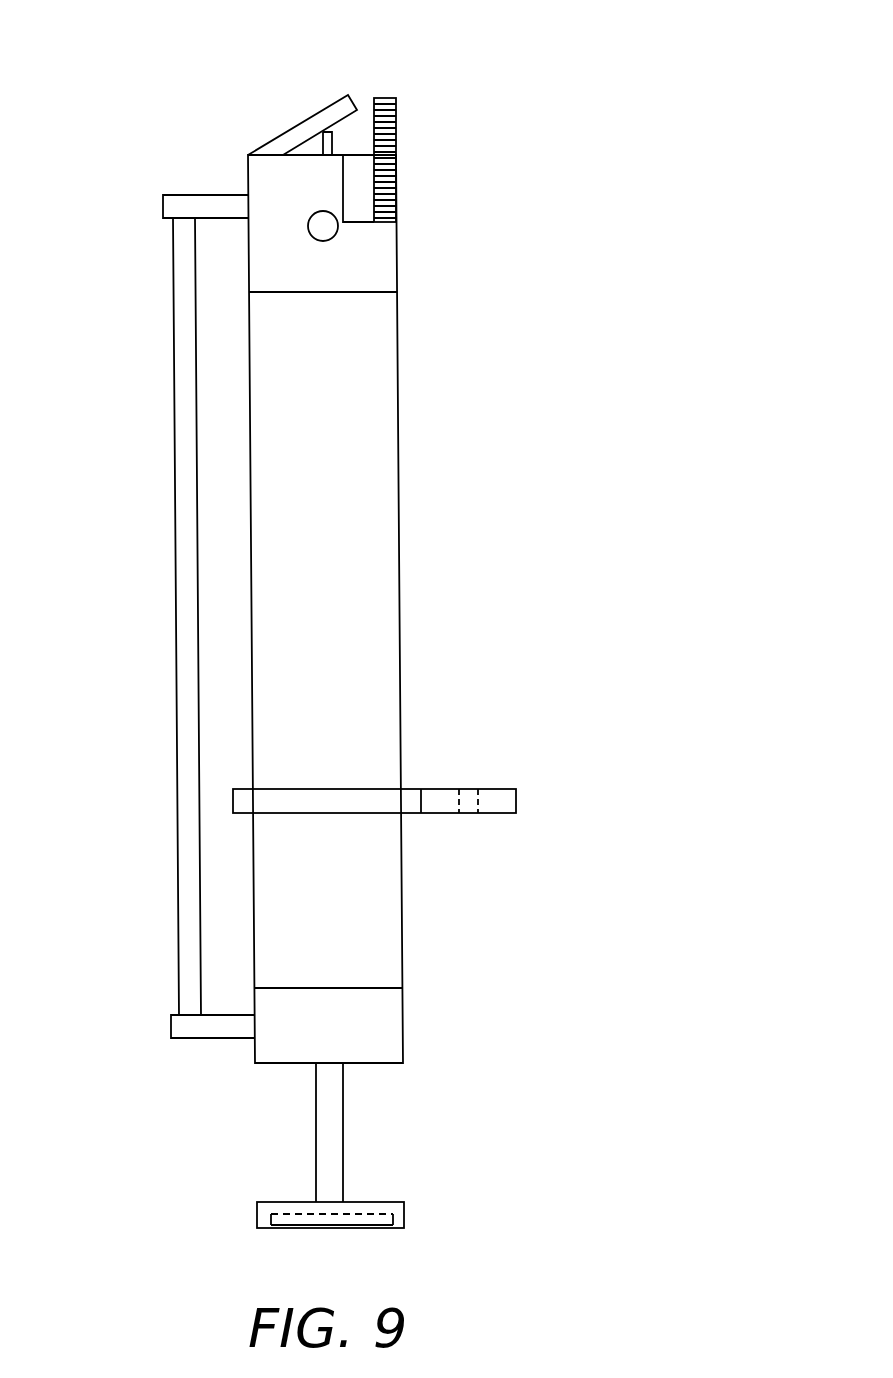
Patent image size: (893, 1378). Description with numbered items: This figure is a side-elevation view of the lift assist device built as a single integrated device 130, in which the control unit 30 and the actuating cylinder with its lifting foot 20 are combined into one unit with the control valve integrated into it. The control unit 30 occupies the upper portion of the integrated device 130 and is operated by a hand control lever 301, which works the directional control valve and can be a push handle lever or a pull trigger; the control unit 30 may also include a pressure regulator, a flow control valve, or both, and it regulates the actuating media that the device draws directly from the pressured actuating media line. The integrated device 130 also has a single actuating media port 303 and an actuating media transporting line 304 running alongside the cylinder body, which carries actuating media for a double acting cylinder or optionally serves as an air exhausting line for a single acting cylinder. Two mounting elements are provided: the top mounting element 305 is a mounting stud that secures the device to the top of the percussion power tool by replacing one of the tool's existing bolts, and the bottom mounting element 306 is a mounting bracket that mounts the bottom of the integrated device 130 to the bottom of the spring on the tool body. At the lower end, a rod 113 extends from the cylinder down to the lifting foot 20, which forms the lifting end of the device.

The lifting foot 20 is at (405, 1212).
The control unit 30 is at (545, 152).
The connecting rod 113 is at (343, 1132).
The integrated device 130 is at (252, 588).
The hand control lever 301 is at (350, 97).
The actuating media port 303 is at (323, 226).
The actuating media transporting line 304 is at (177, 917).
The top mounting element 305 is at (397, 125).
The bottom mounting element 306 is at (517, 800).